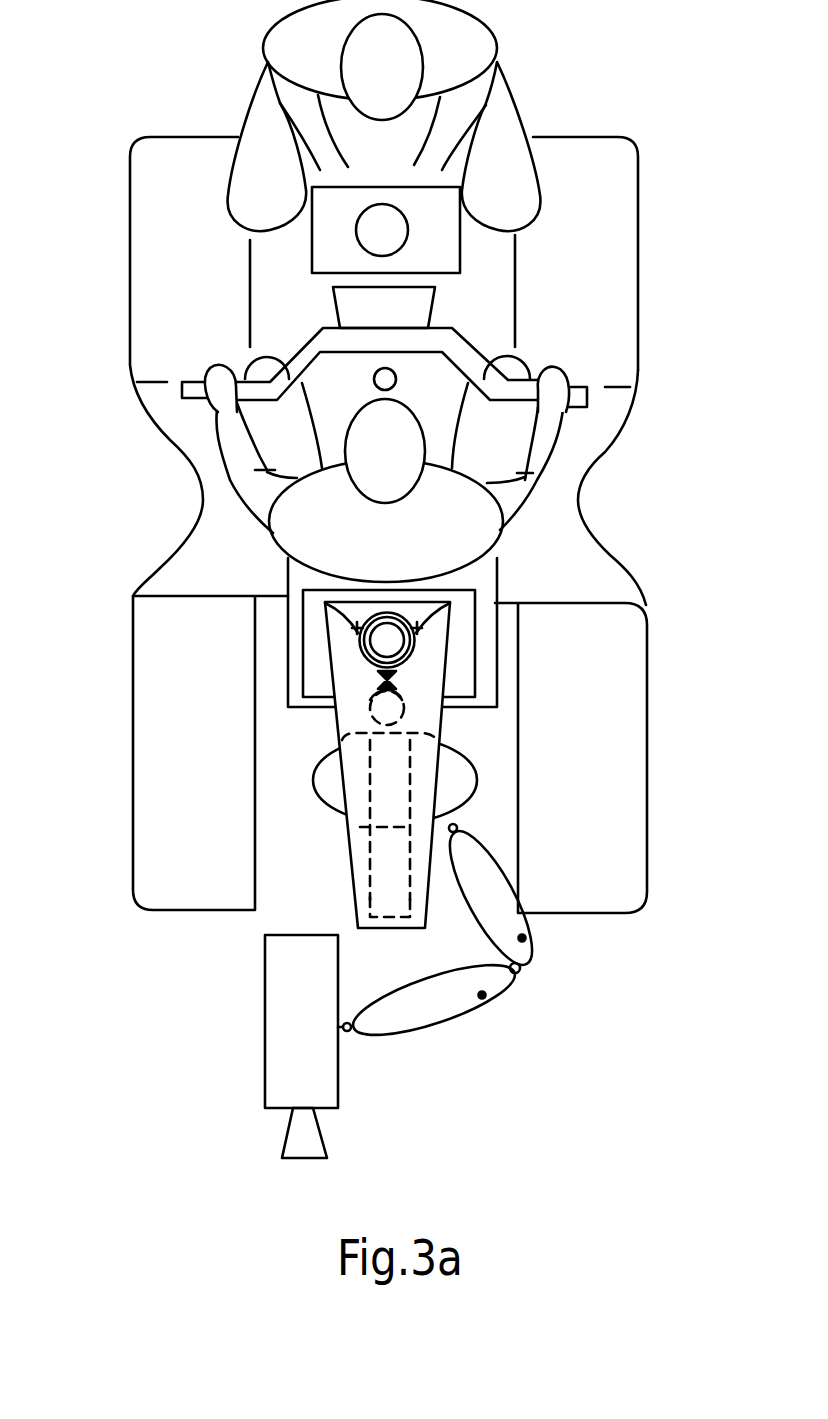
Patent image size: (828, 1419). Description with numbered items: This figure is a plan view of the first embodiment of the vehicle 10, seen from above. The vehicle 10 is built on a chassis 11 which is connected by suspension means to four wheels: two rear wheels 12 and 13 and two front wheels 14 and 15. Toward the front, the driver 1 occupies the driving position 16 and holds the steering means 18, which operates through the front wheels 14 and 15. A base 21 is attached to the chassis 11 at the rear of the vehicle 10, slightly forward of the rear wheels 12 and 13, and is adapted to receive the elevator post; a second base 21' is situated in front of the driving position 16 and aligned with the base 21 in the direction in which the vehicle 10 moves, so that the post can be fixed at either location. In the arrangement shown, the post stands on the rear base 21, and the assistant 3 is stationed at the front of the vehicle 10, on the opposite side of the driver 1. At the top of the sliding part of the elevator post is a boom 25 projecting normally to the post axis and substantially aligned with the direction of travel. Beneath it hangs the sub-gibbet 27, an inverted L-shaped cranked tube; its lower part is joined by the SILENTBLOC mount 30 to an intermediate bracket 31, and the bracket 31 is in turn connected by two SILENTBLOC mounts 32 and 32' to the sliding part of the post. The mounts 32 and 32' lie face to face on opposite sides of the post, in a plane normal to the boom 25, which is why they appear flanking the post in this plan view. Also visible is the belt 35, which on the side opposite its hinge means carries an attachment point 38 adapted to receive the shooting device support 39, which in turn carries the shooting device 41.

The driver 1 is at (460, 532).
The assistant 3 is at (467, 68).
The vehicle 10 is at (683, 420).
The chassis 11 is at (553, 525).
The rear wheel 12 is at (203, 752).
The rear wheel 13 is at (598, 752).
The front wheel 14 is at (200, 247).
The front wheel 15 is at (600, 251).
The driving position 16 is at (445, 396).
The steering means 18 is at (514, 394).
The base 21 is at (471, 765).
The second base 21' is at (452, 244).
The boom 25 is at (362, 854).
The sub-gibbet 27 is at (393, 897).
The SILENTBLOC mount 30 is at (376, 674).
The intermediate bracket 31 is at (365, 658).
The SILENTBLOC mount 32 is at (274, 612).
The SILENTBLOC mount 32' is at (506, 602).
The belt 35 is at (318, 798).
The attachment point 38 is at (456, 826).
The shooting device support 39 is at (484, 996).
The shooting device 41 is at (315, 1038).